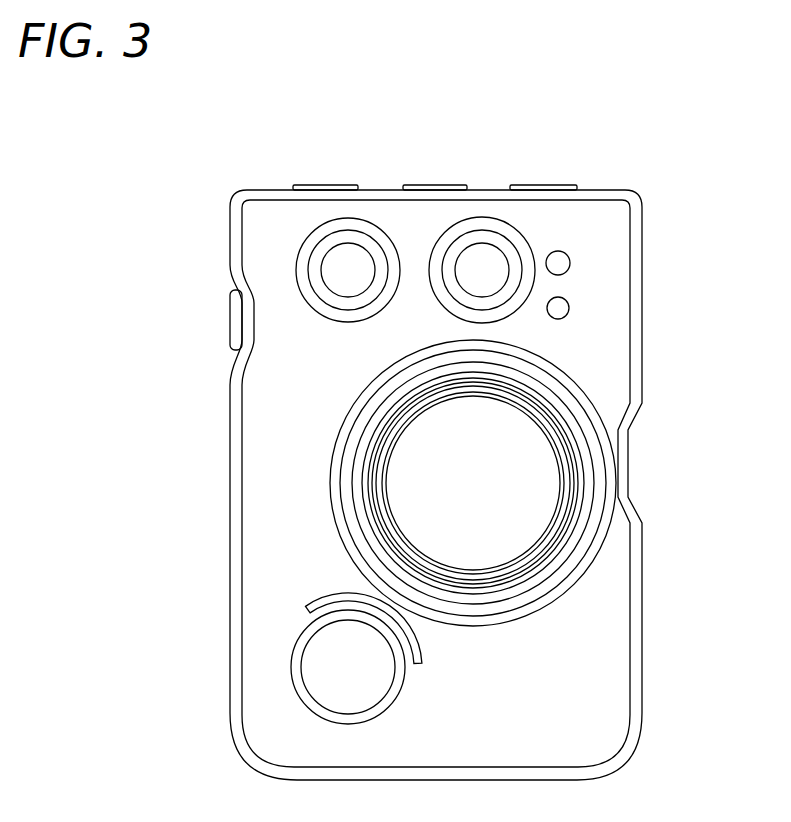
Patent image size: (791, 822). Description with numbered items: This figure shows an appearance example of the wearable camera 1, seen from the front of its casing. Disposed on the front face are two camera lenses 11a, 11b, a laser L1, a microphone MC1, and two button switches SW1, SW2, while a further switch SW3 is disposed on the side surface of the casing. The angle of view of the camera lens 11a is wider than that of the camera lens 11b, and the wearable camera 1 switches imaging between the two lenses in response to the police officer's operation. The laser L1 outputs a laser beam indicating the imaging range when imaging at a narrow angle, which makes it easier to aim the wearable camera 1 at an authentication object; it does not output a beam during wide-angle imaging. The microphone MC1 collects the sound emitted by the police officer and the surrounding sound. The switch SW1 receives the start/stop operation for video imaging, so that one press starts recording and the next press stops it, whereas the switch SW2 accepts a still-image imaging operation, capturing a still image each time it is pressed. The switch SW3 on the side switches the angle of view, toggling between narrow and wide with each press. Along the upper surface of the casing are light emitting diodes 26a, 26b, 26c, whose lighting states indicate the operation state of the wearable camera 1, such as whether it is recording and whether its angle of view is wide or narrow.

The wearable camera 1 is at (461, 114).
The camera lens 11a is at (305, 240).
The camera lens 11b is at (528, 240).
The laser L1 is at (568, 255).
The microphone MC1 is at (570, 303).
The light emitting diode 26a is at (305, 184).
The light emitting diode 26b is at (415, 184).
The light emitting diode 26c is at (522, 184).
The switch SW1 is at (552, 498).
The switch SW2 is at (342, 668).
The switch SW3 is at (230, 318).